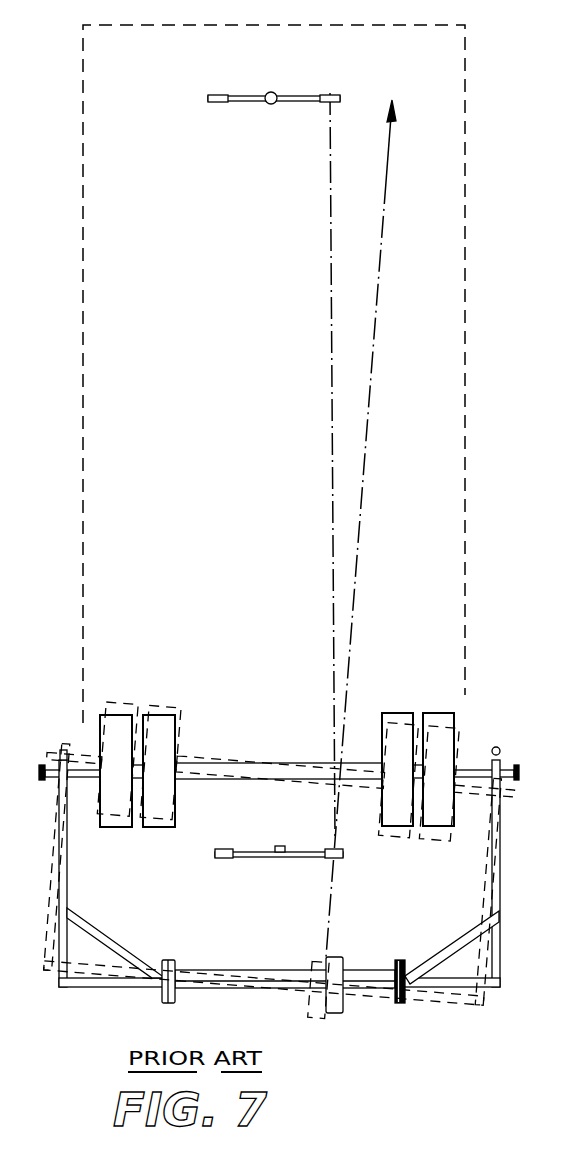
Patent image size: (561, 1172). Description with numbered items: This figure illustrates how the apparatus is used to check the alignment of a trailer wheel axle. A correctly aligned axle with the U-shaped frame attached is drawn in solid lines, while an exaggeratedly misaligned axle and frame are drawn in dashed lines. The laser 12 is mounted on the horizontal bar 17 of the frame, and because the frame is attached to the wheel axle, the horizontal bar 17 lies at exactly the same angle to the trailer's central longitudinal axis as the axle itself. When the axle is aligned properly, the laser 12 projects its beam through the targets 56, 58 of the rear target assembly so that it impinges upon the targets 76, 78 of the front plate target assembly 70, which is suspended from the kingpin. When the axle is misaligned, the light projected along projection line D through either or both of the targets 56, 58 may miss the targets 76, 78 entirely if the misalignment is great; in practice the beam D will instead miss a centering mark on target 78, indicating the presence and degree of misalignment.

The front plate target assembly 70 is at (267, 95).
The target 76 is at (217, 102).
The target 78 is at (336, 101).
The projection line D is at (332, 305).
The target 56 is at (308, 848).
The target 58 is at (343, 853).
The horizontal bar 17 is at (118, 997).
The laser 12 is at (343, 1000).